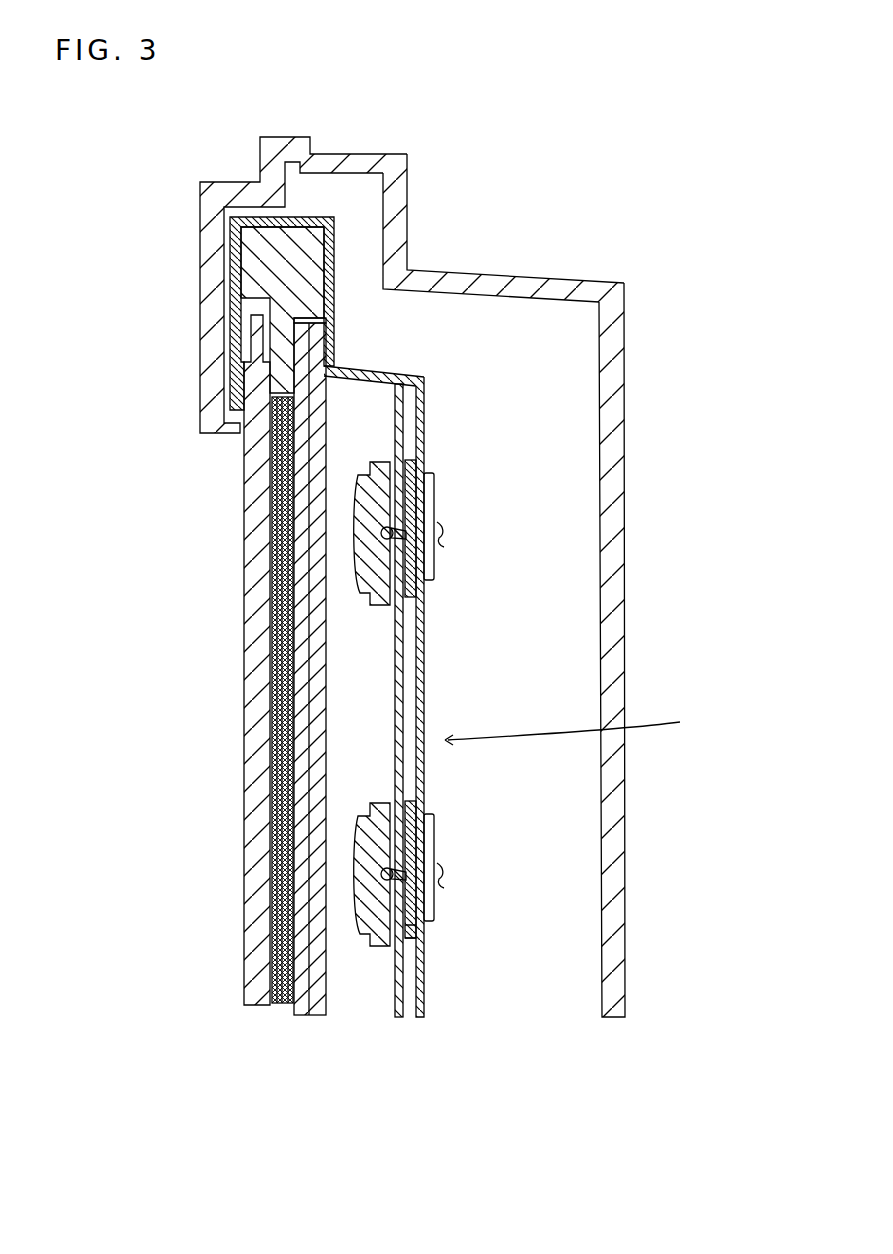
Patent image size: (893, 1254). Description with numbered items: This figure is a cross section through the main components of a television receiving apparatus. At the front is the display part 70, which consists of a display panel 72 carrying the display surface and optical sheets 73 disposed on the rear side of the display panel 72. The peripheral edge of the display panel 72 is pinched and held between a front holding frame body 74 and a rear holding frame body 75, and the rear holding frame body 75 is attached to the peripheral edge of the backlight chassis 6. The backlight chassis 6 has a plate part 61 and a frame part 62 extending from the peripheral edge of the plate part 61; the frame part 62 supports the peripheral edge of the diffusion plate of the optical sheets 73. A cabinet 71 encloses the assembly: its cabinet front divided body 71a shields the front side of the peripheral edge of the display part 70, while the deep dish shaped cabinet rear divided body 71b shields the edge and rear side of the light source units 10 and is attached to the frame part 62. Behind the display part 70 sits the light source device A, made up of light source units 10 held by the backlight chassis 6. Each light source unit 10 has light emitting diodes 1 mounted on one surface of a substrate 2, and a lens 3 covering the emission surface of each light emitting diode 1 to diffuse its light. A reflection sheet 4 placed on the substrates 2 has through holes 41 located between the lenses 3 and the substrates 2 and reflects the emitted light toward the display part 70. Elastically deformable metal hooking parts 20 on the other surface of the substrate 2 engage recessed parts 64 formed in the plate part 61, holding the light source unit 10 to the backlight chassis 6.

The cabinet 71 is at (408, 577).
The cabinet front divided body 71a is at (205, 217).
The cabinet rear divided body 71b is at (627, 370).
The front holding frame body 74 is at (232, 295).
The rear holding frame body 75 is at (315, 242).
The display part 70 is at (200, 665).
The display panel 72 is at (258, 745).
The optical sheets 73 is at (312, 557).
The backlight chassis 6 is at (420, 677).
The plate part 61 is at (428, 700).
The frame part 62 is at (368, 372).
The reflection sheet 4 is at (399, 1021).
The light source unit 10 is at (355, 737).
The lens 3 is at (380, 616).
The substrate 2 is at (436, 483).
The light emitting diode 1 is at (436, 520).
The hooking part 20 is at (447, 540).
The recessed part 64 is at (434, 577).
The through hole 41 is at (420, 946).
The light source device A is at (573, 729).